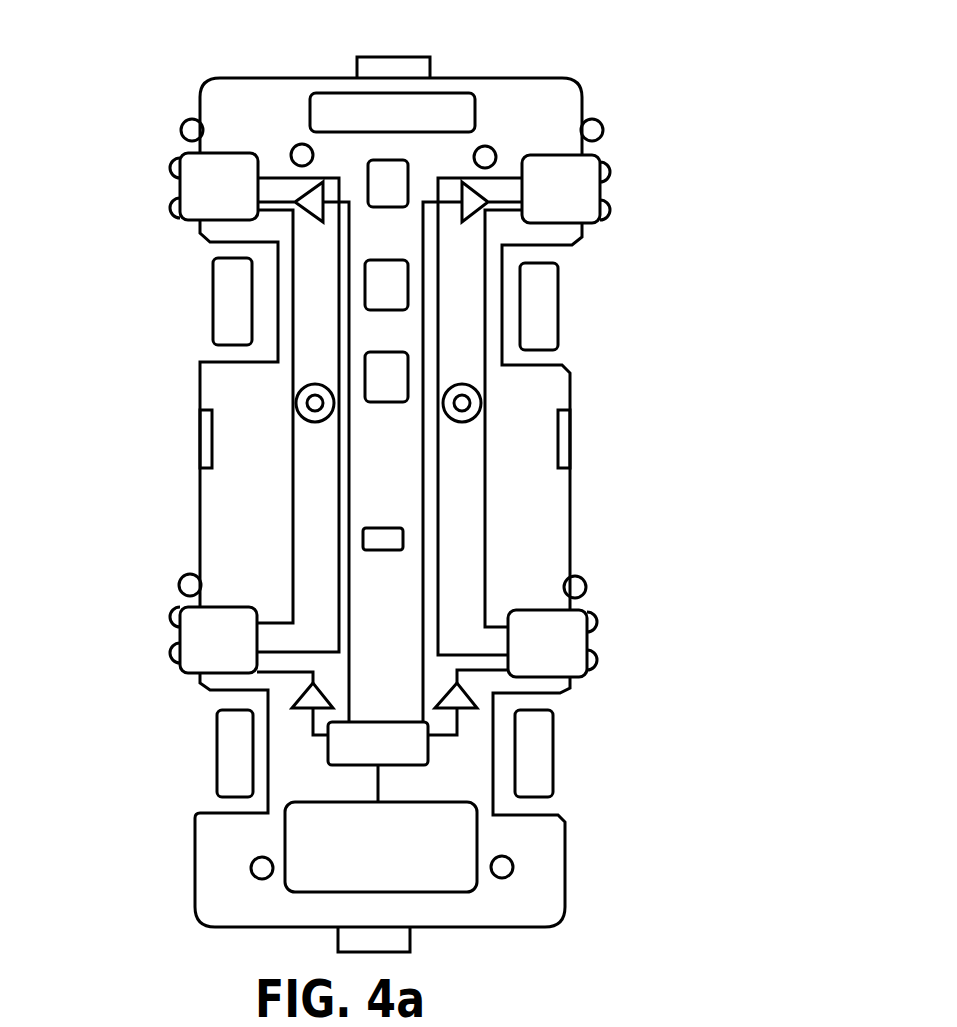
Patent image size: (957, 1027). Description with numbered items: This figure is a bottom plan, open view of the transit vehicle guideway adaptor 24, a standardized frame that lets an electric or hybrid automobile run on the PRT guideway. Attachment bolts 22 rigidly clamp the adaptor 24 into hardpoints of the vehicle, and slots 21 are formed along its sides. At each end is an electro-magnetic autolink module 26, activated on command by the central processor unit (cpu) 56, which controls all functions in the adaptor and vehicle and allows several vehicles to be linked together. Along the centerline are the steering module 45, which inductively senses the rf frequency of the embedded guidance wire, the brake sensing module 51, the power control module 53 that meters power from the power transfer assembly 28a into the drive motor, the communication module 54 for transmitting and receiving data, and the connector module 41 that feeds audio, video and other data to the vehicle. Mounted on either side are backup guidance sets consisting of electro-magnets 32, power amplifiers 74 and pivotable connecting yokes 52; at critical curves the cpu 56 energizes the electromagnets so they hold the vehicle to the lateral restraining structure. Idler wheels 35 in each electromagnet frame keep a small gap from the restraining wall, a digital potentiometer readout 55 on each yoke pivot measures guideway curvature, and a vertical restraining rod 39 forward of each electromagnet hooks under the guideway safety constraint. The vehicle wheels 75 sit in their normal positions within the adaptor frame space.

The slot 21 is at (200, 420).
The attachment bolts 22 is at (495, 152).
The transit vehicle guideway adaptor 24 is at (572, 395).
The electro-magnetic autolink module 26 is at (432, 57).
The power transfer assembly 28a is at (285, 825).
The electro-magnets 32 is at (180, 187).
The idler wheels 35 is at (610, 172).
The vertical restraining rod 39 is at (610, 130).
The connector module 41 is at (363, 538).
The steering module 45 is at (475, 103).
The brake sensing module 51 is at (368, 165).
The pivotable connecting yokes 52 is at (318, 482).
The power control module 53 is at (365, 272).
The communication module 54 is at (365, 375).
The digital potentiometer readout 55 is at (470, 408).
The central processor unit (cpu) 56 is at (428, 750).
The power amplifiers 74 is at (303, 700).
The vehicle wheels 75 is at (558, 307).